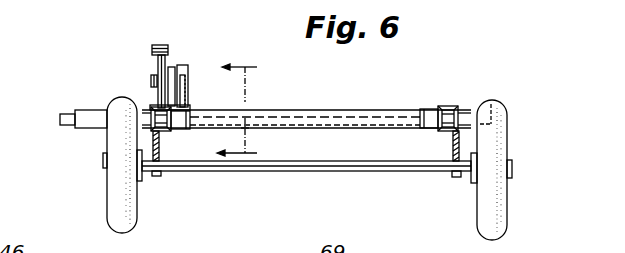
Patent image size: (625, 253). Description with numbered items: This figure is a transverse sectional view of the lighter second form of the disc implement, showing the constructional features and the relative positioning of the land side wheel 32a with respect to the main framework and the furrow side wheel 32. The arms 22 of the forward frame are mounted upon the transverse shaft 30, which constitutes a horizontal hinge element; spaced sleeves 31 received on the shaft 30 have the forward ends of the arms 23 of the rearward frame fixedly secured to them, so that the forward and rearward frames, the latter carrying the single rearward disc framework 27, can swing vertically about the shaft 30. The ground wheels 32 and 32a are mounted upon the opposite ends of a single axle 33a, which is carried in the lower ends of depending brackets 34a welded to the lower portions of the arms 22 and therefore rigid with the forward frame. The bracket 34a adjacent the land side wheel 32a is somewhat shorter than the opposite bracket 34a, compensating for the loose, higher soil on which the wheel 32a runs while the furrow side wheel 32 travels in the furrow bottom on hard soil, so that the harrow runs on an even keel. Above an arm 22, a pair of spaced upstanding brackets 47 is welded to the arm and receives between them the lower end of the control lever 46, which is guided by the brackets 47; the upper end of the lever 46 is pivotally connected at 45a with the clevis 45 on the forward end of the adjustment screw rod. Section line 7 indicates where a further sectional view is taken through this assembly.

The section line 7- 7 is at (243, 110).
The arm 22 is at (183, 106).
The arm 23 is at (194, 108).
The rearward disc framework 27 is at (99, 99).
The transverse shaft 30 is at (150, 112).
The sleeve 31 is at (320, 111).
The furrow side wheel 32 is at (505, 138).
The land side wheel 32a is at (113, 192).
The axle 33a is at (380, 174).
The depending bracket 34a is at (160, 148).
The clevis 45 is at (167, 50).
The pivotal connection 45a is at (170, 46).
The control lever 46 is at (157, 50).
The upstanding bracket 47 is at (178, 66).